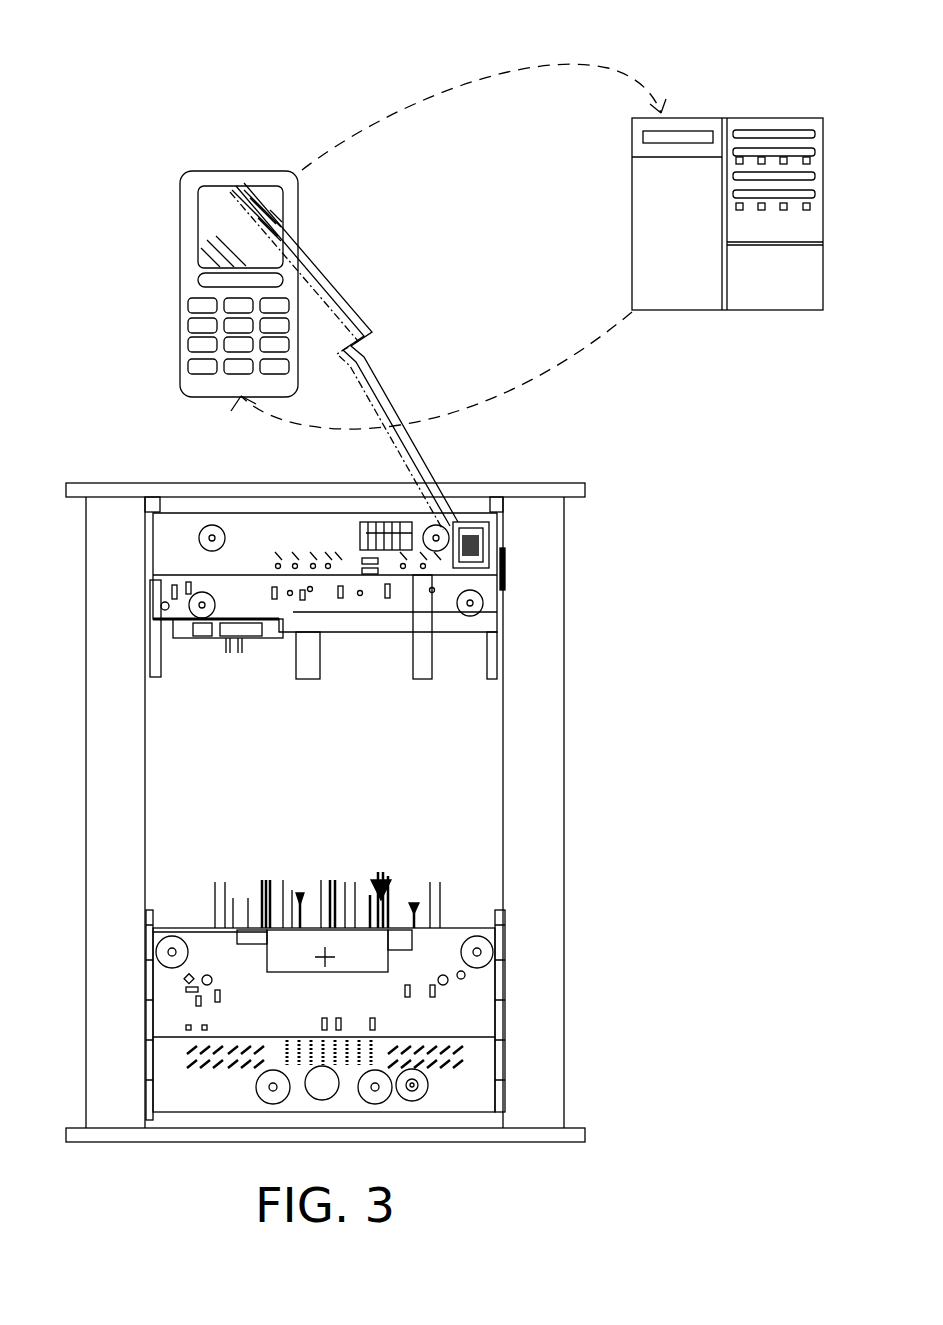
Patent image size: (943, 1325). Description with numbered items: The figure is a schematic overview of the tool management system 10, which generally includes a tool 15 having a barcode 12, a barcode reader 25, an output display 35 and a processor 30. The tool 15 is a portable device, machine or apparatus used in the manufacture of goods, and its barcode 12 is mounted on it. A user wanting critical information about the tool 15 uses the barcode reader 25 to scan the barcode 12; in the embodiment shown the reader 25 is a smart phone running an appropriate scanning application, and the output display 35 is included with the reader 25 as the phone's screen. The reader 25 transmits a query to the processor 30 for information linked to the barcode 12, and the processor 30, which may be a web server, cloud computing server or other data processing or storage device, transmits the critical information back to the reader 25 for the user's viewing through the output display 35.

The tool management system 10 is at (417, 50).
The barcode 12 is at (477, 545).
The tool 15 is at (346, 812).
The barcode reader 25 is at (197, 284).
The processor 30 is at (689, 244).
The output display 35 is at (236, 221).